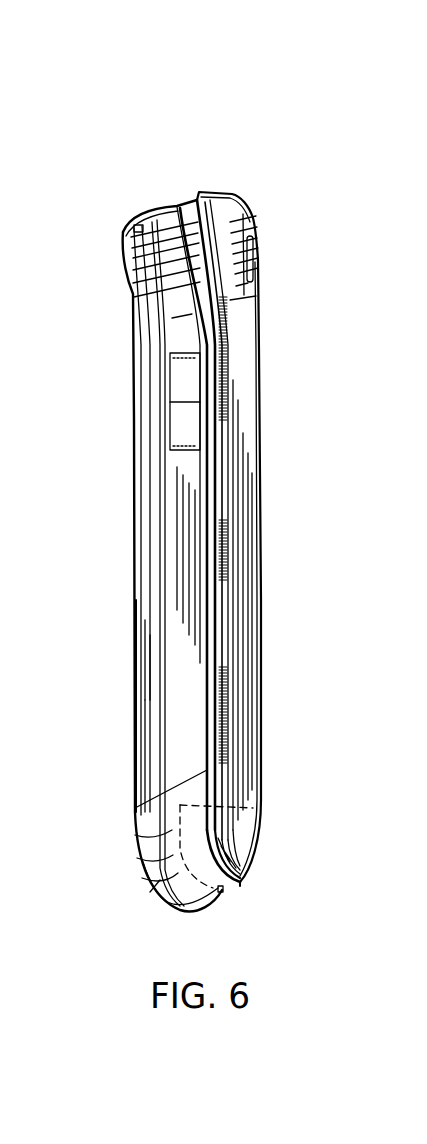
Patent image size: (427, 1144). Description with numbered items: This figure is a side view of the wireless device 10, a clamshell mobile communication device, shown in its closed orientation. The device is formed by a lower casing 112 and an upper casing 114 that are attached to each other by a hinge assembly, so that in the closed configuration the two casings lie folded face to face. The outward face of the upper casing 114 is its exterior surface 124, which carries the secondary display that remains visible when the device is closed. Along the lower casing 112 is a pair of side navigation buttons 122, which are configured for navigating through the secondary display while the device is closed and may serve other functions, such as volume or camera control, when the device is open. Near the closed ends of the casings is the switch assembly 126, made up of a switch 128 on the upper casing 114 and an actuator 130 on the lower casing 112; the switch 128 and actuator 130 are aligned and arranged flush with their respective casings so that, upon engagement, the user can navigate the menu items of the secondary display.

The wireless device 10 is at (224, 95).
The lower casing 112 is at (118, 645).
The upper casing 114 is at (271, 306).
The side navigation buttons 122 is at (181, 389).
The exterior surface 124 is at (262, 517).
The switch assembly 126 is at (268, 894).
The switch 128 is at (246, 832).
The actuator 130 is at (222, 893).